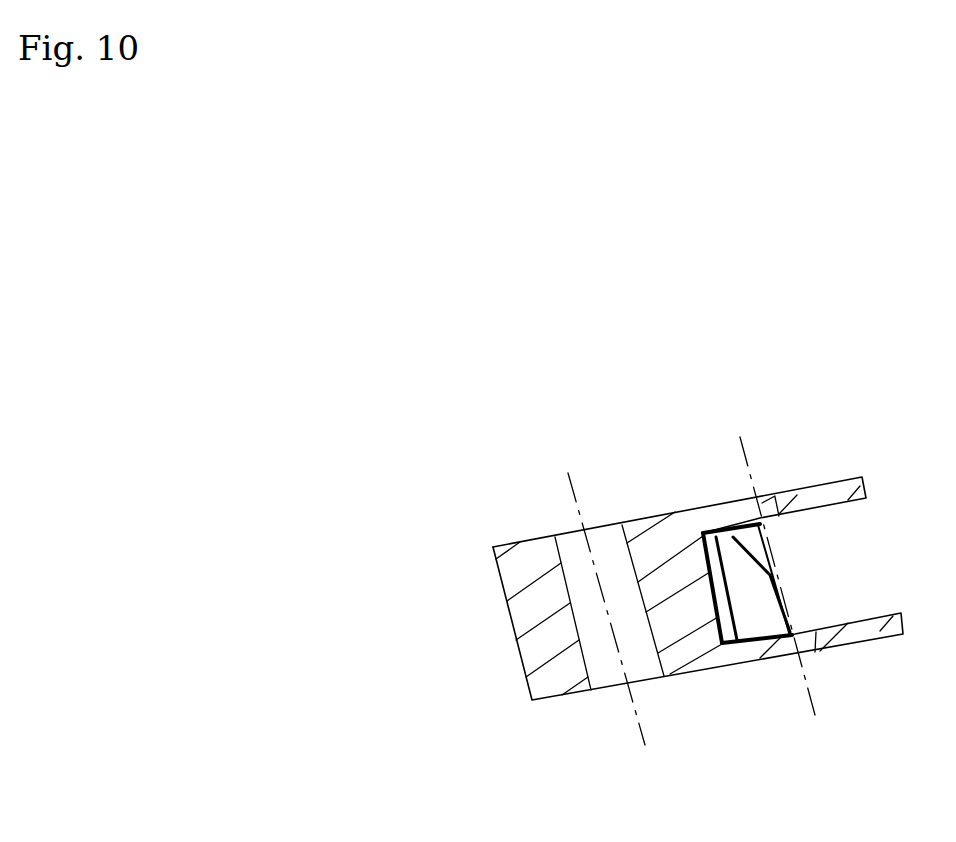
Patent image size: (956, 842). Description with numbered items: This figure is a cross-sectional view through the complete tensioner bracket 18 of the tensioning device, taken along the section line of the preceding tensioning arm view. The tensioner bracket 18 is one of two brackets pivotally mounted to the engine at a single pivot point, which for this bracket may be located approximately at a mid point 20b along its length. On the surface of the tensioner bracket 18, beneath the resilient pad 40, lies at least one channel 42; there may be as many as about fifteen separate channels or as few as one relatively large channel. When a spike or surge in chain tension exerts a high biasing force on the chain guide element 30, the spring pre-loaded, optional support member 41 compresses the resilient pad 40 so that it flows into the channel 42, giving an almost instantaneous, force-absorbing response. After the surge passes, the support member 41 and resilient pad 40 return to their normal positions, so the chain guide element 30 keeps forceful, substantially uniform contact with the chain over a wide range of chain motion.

The tensioner bracket 18 is at (550, 685).
The pivot point 20b is at (573, 554).
The chain guide element 30 is at (762, 582).
The resilient pad 40 is at (713, 532).
The support member 41 is at (749, 634).
The channel 42 is at (703, 550).